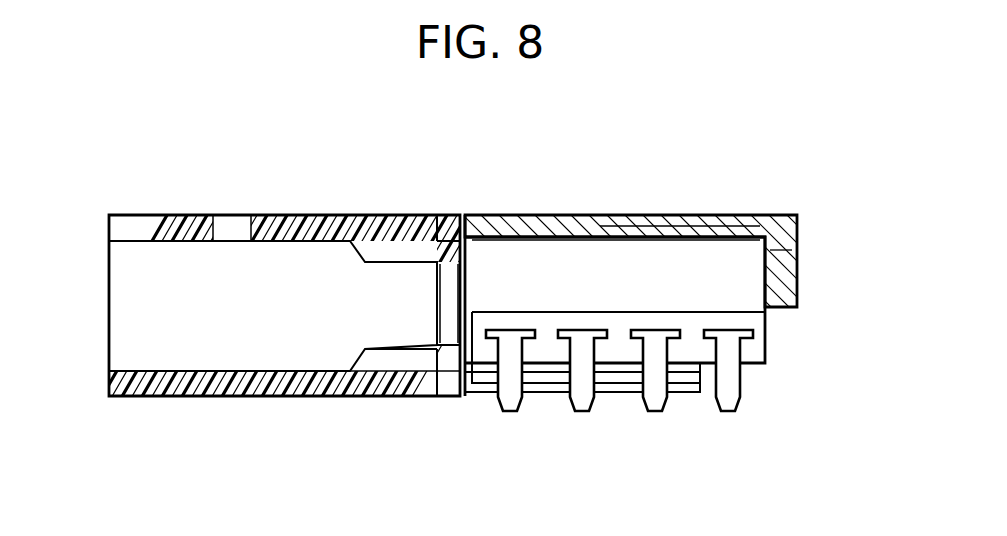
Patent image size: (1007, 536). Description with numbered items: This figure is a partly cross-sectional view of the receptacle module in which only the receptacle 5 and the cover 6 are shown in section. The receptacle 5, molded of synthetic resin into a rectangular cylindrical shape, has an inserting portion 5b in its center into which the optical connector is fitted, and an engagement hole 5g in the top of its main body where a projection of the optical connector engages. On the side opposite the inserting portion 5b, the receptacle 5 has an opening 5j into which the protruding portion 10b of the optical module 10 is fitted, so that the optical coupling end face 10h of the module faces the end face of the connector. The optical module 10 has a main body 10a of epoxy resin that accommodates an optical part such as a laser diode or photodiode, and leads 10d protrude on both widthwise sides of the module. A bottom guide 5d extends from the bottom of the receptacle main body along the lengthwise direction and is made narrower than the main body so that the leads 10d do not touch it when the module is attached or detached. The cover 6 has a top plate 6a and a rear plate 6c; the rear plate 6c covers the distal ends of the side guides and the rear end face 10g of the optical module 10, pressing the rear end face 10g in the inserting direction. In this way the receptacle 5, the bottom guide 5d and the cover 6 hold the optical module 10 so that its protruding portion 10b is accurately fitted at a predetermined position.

The receptacle 5 is at (290, 279).
The engagement hole 5g is at (236, 228).
The inserting portion 5b is at (209, 374).
The opening 5j is at (438, 340).
The bottom guide 5d is at (546, 393).
The optical module 10 is at (598, 287).
The main body 10a is at (593, 253).
The protruding portion 10b is at (450, 288).
The optical coupling end face 10h is at (437, 317).
The leads 10d is at (731, 384).
The rear end face 10g is at (786, 283).
The cover 6 is at (661, 215).
The top plate 6a is at (690, 226).
The rear plate 6c is at (794, 263).